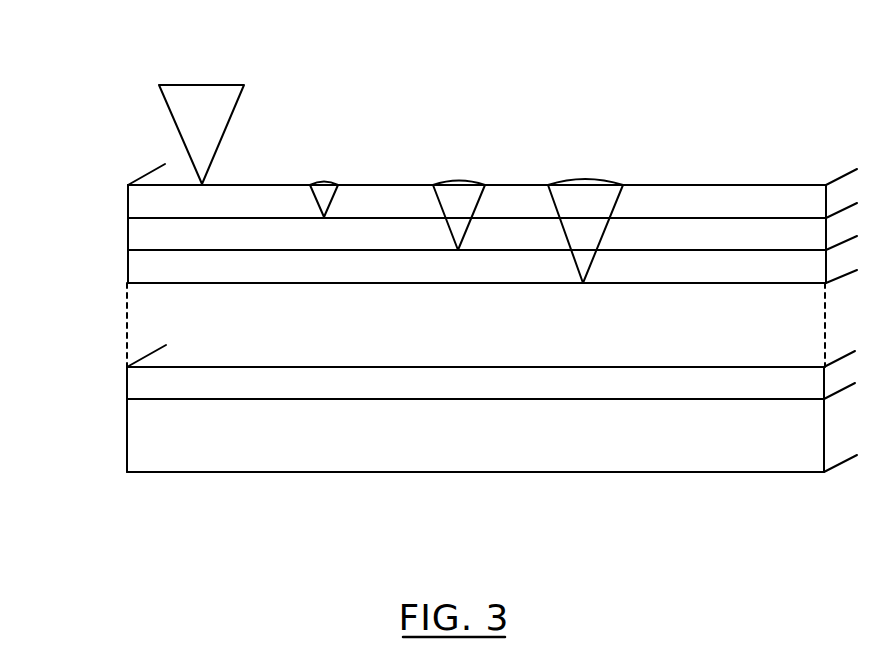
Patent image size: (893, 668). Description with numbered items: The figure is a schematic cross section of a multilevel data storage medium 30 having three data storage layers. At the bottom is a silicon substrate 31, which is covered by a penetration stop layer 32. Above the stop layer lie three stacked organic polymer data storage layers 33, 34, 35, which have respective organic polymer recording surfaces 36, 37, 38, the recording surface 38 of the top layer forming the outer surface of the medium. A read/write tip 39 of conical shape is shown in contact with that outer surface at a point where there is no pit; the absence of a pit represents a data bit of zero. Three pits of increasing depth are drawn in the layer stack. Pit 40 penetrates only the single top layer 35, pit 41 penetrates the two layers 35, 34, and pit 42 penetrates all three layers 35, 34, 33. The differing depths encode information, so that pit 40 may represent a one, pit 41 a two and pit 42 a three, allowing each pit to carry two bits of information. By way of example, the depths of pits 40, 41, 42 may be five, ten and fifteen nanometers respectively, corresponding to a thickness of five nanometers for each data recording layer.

The data storage medium 30 is at (775, 160).
The silicon substrate 31 is at (140, 445).
The penetration stop layer 32 is at (137, 387).
The organic polymer data storage layer 33 is at (142, 268).
The organic polymer data storage layer 34 is at (145, 235).
The organic polymer data storage layer 35 is at (150, 200).
The organic polymer recording surface 36 is at (128, 255).
The organic polymer recording surface 37 is at (128, 221).
The organic polymer recording surface 38 is at (127, 184).
The read/write tip 39 is at (207, 85).
The pit 40 is at (330, 185).
The pit 41 is at (480, 185).
The pit 42 is at (613, 185).